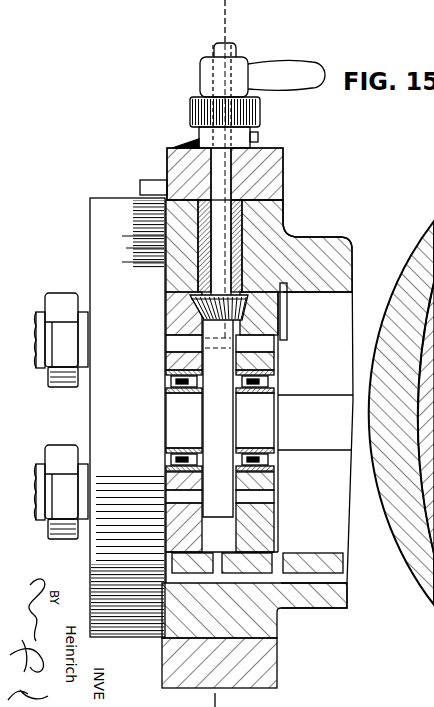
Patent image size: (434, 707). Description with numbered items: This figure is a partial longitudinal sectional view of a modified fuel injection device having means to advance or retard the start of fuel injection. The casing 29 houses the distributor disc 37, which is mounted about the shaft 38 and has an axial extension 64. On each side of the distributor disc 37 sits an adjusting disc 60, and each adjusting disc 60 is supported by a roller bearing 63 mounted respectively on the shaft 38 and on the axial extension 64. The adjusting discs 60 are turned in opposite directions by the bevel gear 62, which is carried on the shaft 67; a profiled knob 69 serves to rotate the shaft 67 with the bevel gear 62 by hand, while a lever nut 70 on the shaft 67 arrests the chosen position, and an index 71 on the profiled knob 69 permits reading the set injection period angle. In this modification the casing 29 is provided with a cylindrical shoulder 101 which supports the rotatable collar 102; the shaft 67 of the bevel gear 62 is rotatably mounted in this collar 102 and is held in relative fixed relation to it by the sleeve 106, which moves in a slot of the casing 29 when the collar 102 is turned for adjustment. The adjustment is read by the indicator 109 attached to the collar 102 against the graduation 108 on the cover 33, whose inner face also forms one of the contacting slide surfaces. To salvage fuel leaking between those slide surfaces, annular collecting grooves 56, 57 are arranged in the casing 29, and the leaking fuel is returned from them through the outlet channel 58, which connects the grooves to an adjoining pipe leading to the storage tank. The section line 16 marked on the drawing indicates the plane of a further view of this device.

The section line 16 is at (236, 4).
The lever nut 70 is at (273, 72).
The index 71 is at (182, 139).
The profiled knob 69 is at (260, 114).
The shaft 67 is at (270, 152).
The rotatable collar 102 is at (272, 176).
The cylindrical shoulder 101 is at (284, 210).
The adjusting disc 60 is at (262, 290).
The casing 29 is at (330, 240).
The indicator 109 is at (150, 180).
The sleeve 106 is at (160, 222).
The bevel gear 62 is at (160, 250).
The graduation 108 is at (150, 258).
The shaft 38 is at (312, 412).
The distributor disc 37 is at (218, 412).
The roller bearing 63 is at (205, 391).
The axial extension 64 is at (183, 437).
The cover 33 is at (127, 554).
The collecting groove 56 is at (272, 640).
The collecting groove 57 is at (296, 576).
The outlet channel 58 is at (340, 600).